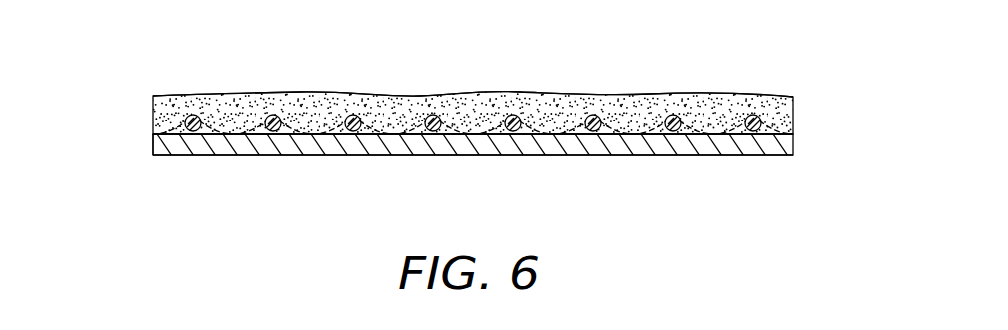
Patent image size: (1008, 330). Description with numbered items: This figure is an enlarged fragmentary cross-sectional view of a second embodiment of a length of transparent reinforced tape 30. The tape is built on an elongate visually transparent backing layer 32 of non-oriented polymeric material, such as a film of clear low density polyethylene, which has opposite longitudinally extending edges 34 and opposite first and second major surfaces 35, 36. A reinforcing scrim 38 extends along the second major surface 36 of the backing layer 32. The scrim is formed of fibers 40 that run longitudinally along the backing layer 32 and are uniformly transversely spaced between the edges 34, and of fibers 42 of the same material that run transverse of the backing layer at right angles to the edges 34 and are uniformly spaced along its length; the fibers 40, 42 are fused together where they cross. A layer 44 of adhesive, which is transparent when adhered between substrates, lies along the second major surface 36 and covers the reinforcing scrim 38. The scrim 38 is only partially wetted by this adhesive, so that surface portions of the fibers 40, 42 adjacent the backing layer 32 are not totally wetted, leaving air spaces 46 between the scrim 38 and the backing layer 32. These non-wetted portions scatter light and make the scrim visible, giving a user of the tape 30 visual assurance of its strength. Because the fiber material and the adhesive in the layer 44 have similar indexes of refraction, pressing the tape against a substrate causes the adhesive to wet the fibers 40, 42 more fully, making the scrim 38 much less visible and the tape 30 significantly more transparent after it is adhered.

The reinforced tape 30 is at (455, 112).
The backing layer 32 is at (745, 148).
The longitudinally extending edges 34 is at (153, 140).
The first major surface 35 is at (497, 156).
The second major surface 36 is at (472, 134).
The reinforcing scrim 38 is at (586, 135).
The fibers 40 is at (353, 114).
The fibers 42 is at (541, 110).
The layer of adhesive 44 is at (636, 96).
The air spaces 46 is at (412, 132).